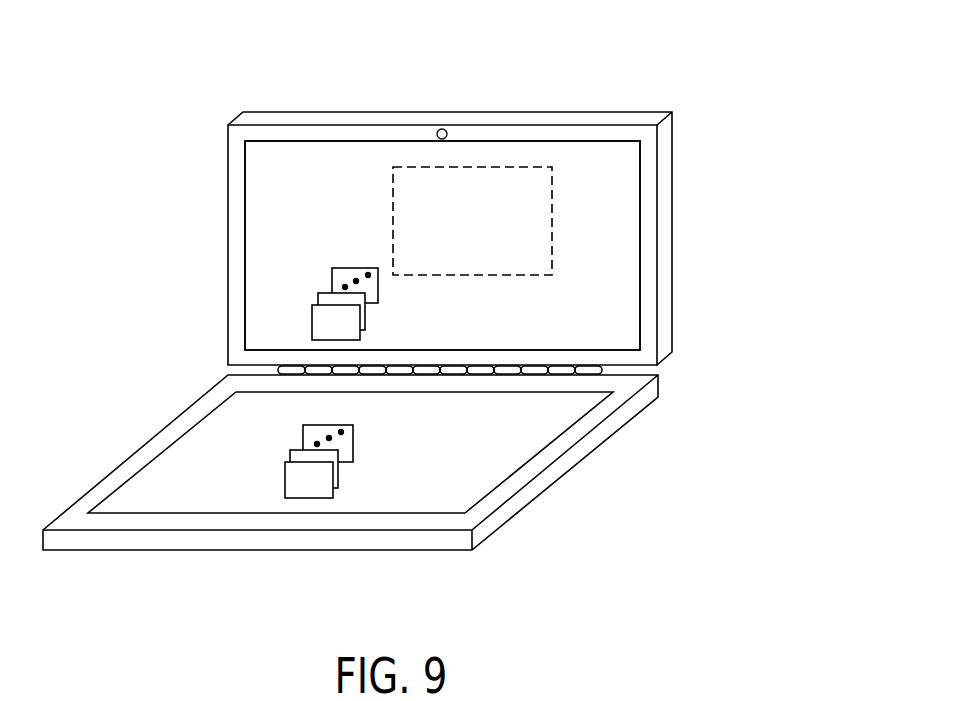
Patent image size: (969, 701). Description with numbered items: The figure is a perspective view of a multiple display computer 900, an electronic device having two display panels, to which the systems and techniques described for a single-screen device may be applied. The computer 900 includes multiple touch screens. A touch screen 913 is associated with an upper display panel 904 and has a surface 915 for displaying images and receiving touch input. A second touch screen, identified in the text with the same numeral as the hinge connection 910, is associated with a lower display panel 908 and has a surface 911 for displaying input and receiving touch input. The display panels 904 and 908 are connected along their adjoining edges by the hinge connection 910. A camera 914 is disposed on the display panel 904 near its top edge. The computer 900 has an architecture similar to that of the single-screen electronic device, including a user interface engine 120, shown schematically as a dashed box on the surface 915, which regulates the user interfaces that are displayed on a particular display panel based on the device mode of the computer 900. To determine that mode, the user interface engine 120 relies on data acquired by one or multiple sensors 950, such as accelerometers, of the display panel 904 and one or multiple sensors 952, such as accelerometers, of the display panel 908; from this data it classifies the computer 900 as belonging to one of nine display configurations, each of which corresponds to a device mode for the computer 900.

The multiple display computer 900 is at (682, 58).
The user interface engine 120 is at (474, 165).
The camera 914 is at (436, 134).
The touch screen 913 is at (640, 190).
The display panel 904 is at (657, 245).
The surface 915 is at (625, 305).
The sensors 950 is at (343, 256).
The sensors 952 is at (317, 413).
The hinge connection 910 is at (278, 370).
The display panel 908 is at (567, 457).
The surface 911 is at (458, 485).